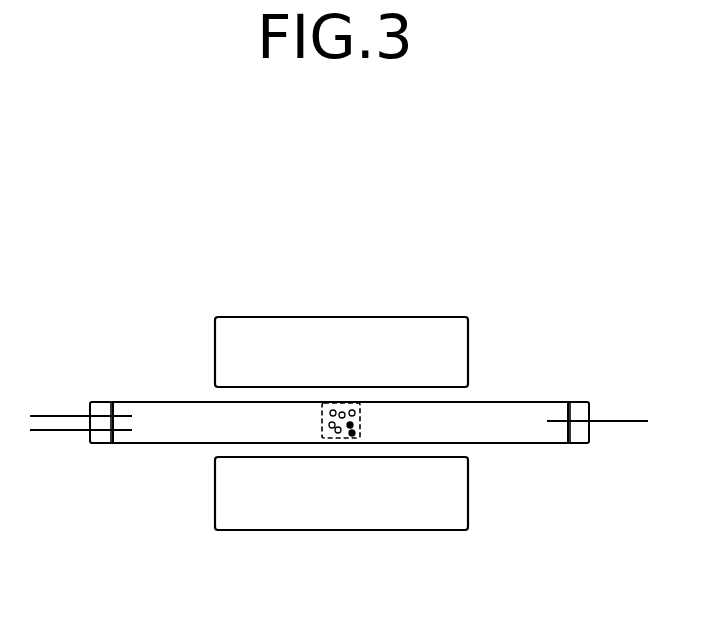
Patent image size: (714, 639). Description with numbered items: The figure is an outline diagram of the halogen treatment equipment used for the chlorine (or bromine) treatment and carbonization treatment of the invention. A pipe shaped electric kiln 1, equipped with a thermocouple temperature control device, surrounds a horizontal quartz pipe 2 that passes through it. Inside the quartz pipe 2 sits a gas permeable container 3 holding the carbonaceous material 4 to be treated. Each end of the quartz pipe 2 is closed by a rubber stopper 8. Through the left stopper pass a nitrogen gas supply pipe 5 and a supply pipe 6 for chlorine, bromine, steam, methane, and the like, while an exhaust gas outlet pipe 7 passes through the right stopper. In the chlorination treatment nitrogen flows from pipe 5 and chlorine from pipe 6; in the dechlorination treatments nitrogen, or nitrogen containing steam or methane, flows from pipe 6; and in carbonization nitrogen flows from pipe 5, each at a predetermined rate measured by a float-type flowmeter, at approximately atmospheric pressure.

The pipe shaped electric kiln 1 is at (292, 333).
The quartz pipe 2 is at (518, 408).
The container for carbonaceous material 3 is at (358, 425).
The carbonaceous material 4 is at (337, 407).
The nitrogen gas supply pipe 5 is at (57, 410).
The supply pipe for chlorine, bromine, steam, methane, and the like 6 is at (58, 445).
The exhaust gas outlet pipe 7 is at (633, 420).
The rubber stopper 8 is at (100, 406).